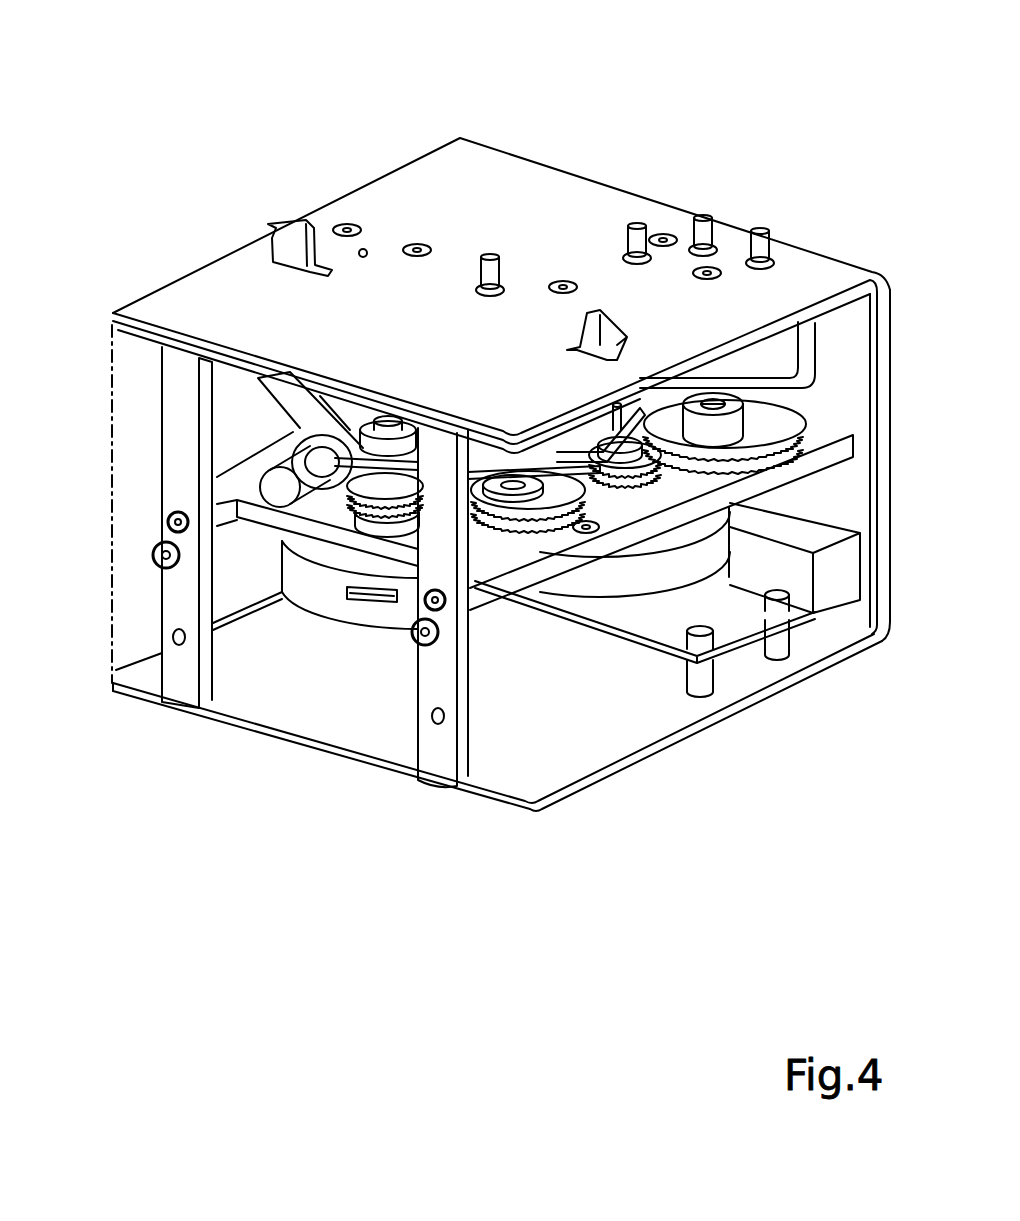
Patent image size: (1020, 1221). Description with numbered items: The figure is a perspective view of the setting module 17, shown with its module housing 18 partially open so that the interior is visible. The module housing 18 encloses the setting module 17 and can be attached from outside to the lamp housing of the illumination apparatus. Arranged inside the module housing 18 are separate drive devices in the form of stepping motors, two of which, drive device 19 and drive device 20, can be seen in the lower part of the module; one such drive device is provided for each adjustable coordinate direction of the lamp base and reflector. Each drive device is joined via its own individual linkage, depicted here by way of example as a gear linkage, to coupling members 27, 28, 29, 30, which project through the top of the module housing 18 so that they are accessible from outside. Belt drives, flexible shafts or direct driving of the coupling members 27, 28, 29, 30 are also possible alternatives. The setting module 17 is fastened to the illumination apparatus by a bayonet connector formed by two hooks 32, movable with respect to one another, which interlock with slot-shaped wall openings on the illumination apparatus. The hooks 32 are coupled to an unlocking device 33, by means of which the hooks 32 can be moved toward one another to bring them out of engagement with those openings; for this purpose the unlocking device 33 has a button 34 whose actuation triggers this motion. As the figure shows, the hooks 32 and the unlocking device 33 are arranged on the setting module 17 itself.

The setting module 17 is at (813, 633).
The module housing 18 is at (620, 775).
The drive device 19 is at (327, 602).
The drive device 20 is at (623, 582).
The coupling member 27 is at (483, 257).
The coupling member 28 is at (637, 236).
The coupling member 29 is at (713, 222).
The coupling member 30 is at (776, 244).
The hook 32 is at (288, 236).
The unlocking device 33 is at (296, 427).
The button 34 is at (287, 493).